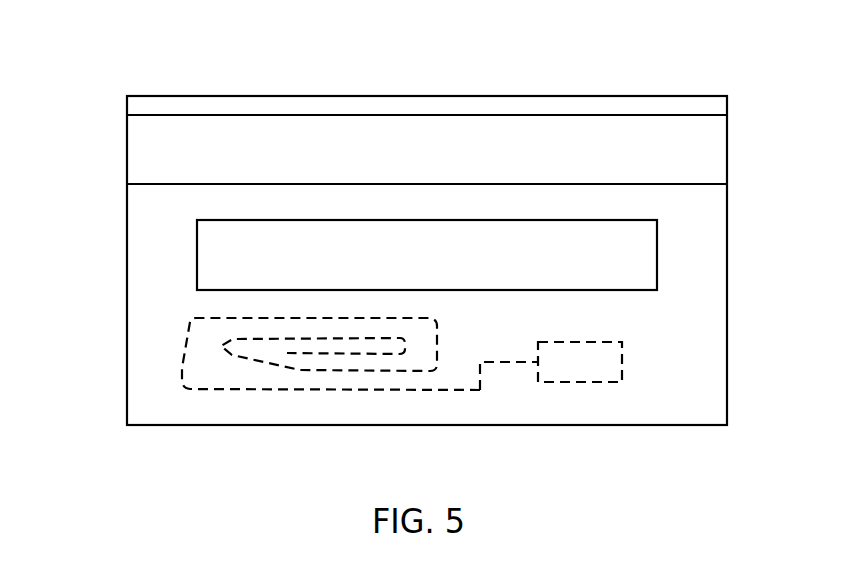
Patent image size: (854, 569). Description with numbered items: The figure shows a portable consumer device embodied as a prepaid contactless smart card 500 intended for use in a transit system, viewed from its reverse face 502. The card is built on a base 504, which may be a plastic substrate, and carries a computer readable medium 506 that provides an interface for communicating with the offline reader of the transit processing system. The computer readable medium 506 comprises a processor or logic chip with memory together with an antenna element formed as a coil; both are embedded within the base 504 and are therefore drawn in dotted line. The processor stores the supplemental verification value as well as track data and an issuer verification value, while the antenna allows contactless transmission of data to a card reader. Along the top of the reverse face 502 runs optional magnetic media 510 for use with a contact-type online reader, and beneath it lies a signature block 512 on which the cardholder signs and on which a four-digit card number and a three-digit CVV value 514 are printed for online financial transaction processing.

The contactless smart card 500 is at (104, 445).
The reverse face 502 is at (155, 300).
The base 504 is at (658, 96).
The computer readable medium 506 is at (152, 360).
The magnetic media 510 is at (153, 158).
The signature block 512 is at (215, 247).
The CVV value 514 is at (622, 273).